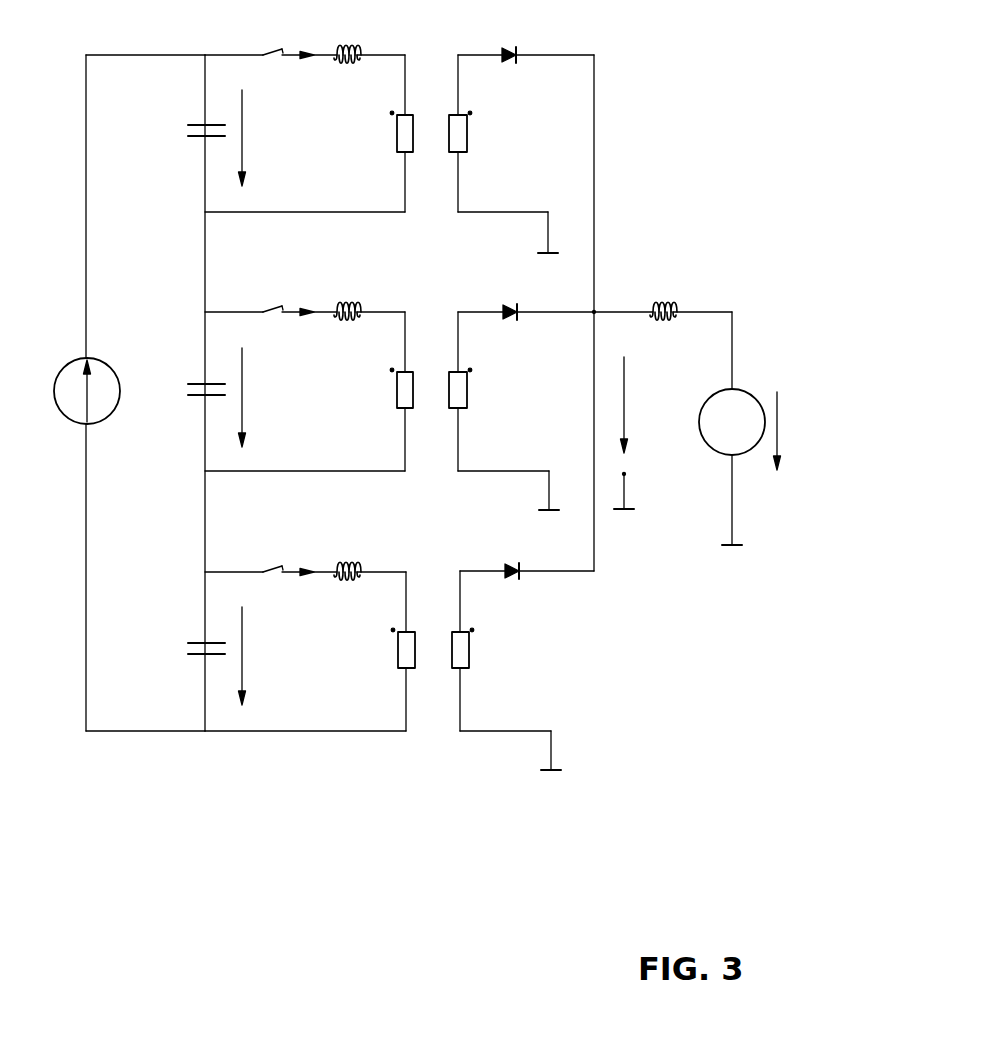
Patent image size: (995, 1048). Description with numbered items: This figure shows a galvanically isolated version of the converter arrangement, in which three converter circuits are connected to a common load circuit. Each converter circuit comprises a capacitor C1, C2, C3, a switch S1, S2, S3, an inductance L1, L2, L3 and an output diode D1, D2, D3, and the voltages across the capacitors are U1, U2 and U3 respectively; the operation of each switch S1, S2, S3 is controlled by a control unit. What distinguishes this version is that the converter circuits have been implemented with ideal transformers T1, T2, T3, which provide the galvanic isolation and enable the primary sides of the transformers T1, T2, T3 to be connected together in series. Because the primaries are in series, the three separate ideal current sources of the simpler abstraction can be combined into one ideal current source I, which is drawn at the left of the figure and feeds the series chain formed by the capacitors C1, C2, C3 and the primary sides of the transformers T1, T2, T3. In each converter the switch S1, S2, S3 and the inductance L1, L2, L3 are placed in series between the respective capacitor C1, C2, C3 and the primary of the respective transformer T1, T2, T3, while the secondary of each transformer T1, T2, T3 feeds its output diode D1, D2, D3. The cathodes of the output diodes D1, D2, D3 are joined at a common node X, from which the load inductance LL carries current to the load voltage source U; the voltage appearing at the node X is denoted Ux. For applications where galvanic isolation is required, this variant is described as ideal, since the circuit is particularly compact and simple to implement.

The ideal current source I is at (73, 391).
The capacitor C1 is at (194, 132).
The capacitor C2 is at (194, 391).
The capacitor C3 is at (194, 650).
The voltage across the capacitor U1 is at (258, 138).
The voltage across the capacitor U2 is at (258, 397).
The voltage across the capacitor U3 is at (258, 656).
The switch S1 is at (259, 36).
The switch S2 is at (259, 293).
The switch S3 is at (259, 553).
The inductance L1 is at (359, 38).
The inductance L2 is at (359, 295).
The inductance L3 is at (360, 555).
The ideal transformer T1 is at (381, 154).
The ideal transformer T2 is at (382, 411).
The ideal transformer T3 is at (383, 670).
The output diode D1 is at (526, 38).
The output diode D2 is at (526, 330).
The output diode D3 is at (527, 589).
The output node X is at (594, 312).
The load inductor LL is at (663, 291).
The output node voltage Ux is at (635, 433).
The load voltage source U is at (748, 428).